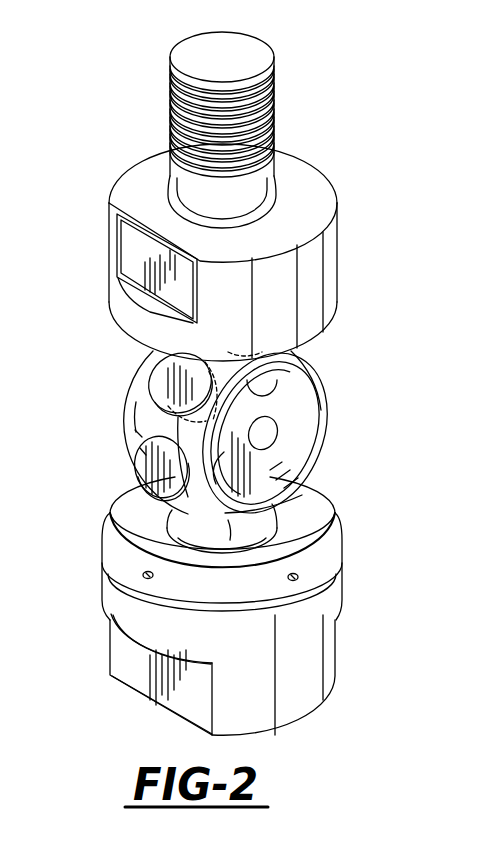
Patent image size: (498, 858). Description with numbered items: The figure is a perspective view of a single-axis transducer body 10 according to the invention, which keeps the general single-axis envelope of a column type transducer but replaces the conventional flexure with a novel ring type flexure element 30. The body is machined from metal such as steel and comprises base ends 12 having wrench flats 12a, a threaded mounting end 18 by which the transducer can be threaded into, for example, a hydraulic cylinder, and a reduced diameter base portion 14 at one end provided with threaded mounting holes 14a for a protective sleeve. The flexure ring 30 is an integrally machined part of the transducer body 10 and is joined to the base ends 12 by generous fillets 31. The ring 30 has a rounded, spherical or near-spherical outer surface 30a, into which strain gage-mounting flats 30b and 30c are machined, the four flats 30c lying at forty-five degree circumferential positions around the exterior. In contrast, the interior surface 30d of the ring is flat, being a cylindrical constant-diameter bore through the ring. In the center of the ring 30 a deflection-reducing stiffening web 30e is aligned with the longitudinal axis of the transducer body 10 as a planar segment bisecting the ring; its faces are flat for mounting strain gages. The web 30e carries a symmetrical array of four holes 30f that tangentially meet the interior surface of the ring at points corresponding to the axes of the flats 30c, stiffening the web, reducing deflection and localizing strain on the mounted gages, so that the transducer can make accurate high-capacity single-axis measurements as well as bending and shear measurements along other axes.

The transducer body 10 is at (313, 93).
The threaded mounting end 18 is at (171, 110).
The base end 12 is at (303, 268).
The wrench flat 12a is at (183, 697).
The ring type flexure element 30 is at (342, 349).
The rounded outer surface 30a is at (143, 408).
The strain gage-mounting flat 30b is at (143, 465).
The strain gage-mounting flat 30c is at (167, 373).
The interior surface 30d is at (292, 447).
The stiffening web 30e is at (228, 450).
The holes 30f is at (226, 450).
The reduced diameter base portion 14 is at (118, 550).
The threaded mounting holes 14a is at (147, 573).
The fillet 31 is at (220, 540).